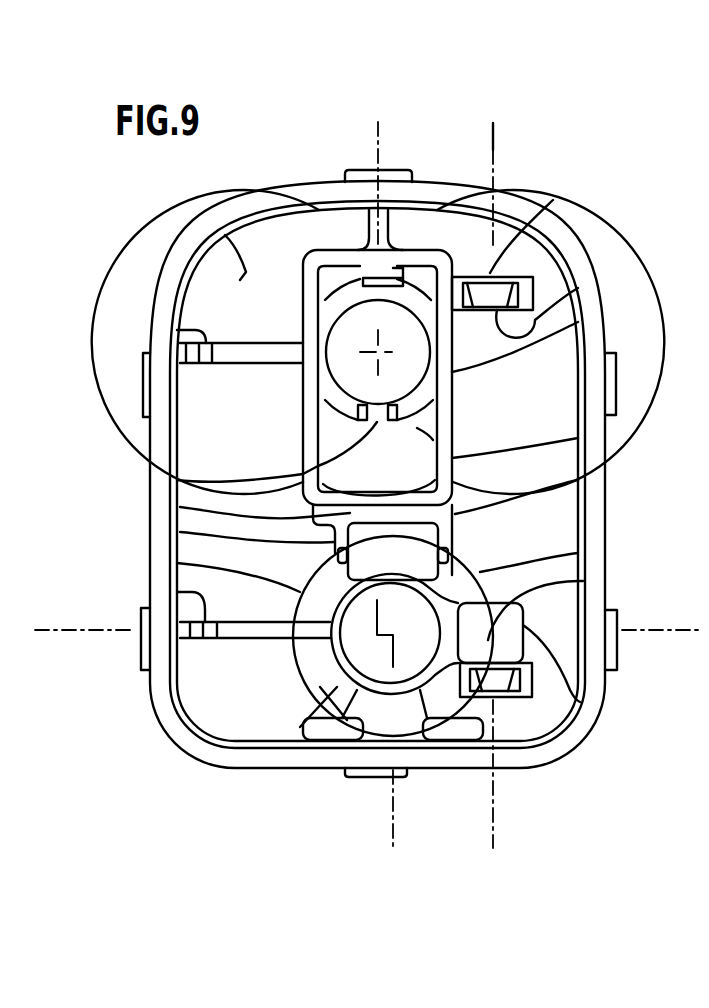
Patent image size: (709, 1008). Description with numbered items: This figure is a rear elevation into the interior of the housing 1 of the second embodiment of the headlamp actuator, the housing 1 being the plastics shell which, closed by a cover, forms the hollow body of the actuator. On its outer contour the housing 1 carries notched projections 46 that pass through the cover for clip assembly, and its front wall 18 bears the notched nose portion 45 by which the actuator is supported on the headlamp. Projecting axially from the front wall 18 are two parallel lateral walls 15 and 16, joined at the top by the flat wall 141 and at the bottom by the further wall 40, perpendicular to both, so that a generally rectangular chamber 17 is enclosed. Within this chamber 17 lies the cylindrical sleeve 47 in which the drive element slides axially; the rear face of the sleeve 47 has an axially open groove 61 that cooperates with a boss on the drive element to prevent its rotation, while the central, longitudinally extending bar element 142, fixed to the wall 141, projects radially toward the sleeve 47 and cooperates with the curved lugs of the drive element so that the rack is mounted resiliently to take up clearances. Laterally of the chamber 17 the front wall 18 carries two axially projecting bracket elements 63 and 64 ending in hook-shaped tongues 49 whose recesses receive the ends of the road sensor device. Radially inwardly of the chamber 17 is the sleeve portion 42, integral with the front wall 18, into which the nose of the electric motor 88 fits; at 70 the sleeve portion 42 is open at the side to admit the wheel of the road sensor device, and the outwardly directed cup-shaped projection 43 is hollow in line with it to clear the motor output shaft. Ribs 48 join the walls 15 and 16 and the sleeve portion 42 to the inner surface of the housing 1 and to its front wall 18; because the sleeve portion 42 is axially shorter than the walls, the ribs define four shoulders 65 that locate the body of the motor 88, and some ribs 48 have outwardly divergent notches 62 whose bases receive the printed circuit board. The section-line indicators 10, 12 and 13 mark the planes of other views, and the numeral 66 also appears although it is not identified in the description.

The housing 1 is at (155, 250).
The section line 10 is at (52, 618).
The section line 12 is at (508, 135).
The section line 13 is at (366, 135).
The second projecting lateral wall 15 is at (303, 400).
The lateral wall 16 is at (578, 322).
The rectangular chamber 17 is at (578, 438).
The front wall 18 is at (568, 425).
The further wall 40 is at (180, 507).
The sleeve portion 42 is at (367, 700).
The cup-shaped projection 43 is at (580, 677).
The notched nose portion 45 is at (225, 235).
The notched projections 46 is at (617, 372).
The cylindrical sleeve 47 is at (327, 362).
The ribs 48 is at (370, 230).
The hook-shaped tongues 49 is at (578, 288).
The groove 61 is at (177, 480).
The notches 62 is at (178, 330).
The bracket element 63 is at (533, 277).
The bracket element 64 is at (570, 745).
The shoulders 65 is at (177, 563).
The conductor wire 66 is at (180, 532).
The side opening 70 is at (583, 581).
The electric motor 88 is at (578, 553).
The wall 141 is at (544, 226).
The bar element 142 is at (398, 285).